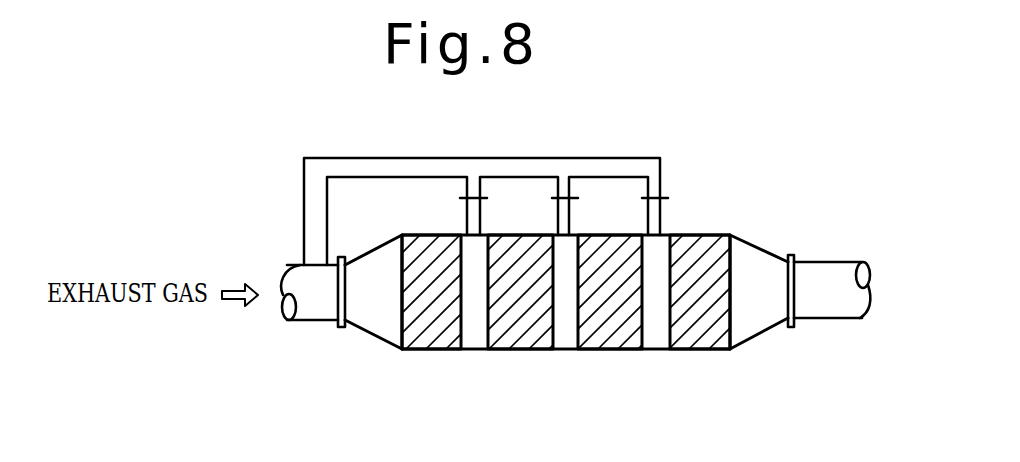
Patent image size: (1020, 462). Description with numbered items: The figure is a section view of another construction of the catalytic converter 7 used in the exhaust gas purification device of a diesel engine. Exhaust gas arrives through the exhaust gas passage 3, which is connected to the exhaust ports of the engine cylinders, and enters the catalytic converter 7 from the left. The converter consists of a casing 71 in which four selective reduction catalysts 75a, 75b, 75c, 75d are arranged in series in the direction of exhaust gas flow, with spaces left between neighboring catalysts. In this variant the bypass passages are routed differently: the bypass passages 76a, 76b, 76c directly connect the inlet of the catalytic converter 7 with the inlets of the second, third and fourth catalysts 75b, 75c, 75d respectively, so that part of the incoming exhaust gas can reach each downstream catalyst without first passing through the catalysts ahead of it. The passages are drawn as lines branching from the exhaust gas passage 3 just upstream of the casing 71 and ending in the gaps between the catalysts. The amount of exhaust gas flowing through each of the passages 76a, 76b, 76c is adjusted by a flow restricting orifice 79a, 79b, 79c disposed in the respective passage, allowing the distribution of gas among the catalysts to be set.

The exhaust gas passage 3 is at (315, 308).
The catalytic converter 7 is at (604, 346).
The casing 71 is at (760, 335).
The selective reduction catalyst 75a is at (432, 349).
The selective reduction catalyst 75b is at (515, 349).
The selective reduction catalyst 75c is at (604, 349).
The selective reduction catalyst 75d is at (688, 349).
The bypass passage 76a is at (483, 226).
The bypass passage 76b is at (575, 227).
The bypass passage 76c is at (663, 227).
The flow restricting orifice 79a is at (466, 199).
The flow restricting orifice 79b is at (558, 197).
The flow restricting orifice 79c is at (648, 197).